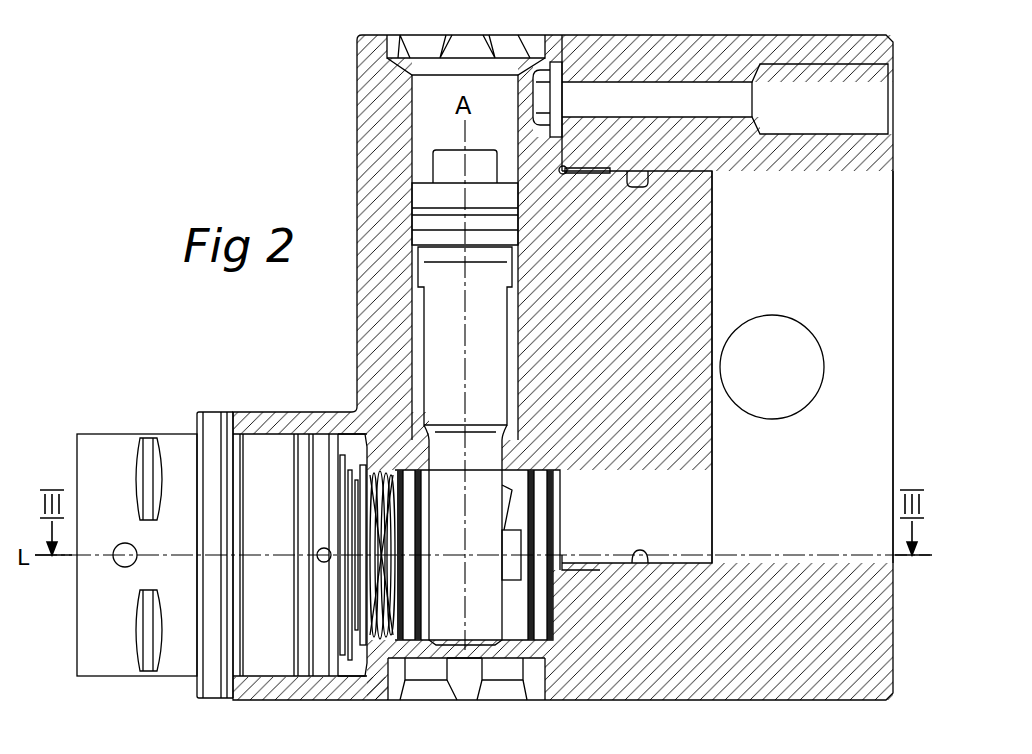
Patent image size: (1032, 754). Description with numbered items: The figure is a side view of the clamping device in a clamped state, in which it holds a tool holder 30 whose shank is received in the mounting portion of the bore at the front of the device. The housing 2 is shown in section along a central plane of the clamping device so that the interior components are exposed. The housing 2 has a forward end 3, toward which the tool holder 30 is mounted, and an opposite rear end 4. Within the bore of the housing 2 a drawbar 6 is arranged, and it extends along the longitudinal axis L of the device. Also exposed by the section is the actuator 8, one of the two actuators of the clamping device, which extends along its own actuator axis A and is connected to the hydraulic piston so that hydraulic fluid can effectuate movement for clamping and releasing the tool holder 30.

The housing 2 is at (378, 182).
The forward end 3 is at (208, 400).
The rear end 4 is at (737, 488).
The drawbar 6 is at (508, 612).
The actuator 8 is at (442, 365).
The tool holder 30 is at (100, 460).